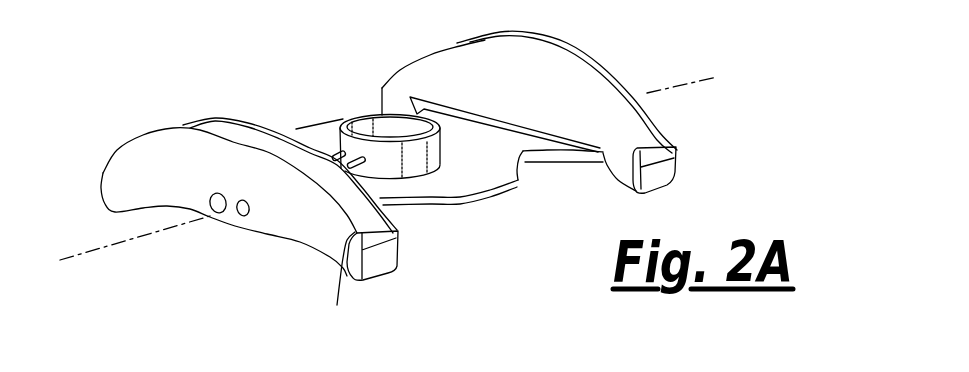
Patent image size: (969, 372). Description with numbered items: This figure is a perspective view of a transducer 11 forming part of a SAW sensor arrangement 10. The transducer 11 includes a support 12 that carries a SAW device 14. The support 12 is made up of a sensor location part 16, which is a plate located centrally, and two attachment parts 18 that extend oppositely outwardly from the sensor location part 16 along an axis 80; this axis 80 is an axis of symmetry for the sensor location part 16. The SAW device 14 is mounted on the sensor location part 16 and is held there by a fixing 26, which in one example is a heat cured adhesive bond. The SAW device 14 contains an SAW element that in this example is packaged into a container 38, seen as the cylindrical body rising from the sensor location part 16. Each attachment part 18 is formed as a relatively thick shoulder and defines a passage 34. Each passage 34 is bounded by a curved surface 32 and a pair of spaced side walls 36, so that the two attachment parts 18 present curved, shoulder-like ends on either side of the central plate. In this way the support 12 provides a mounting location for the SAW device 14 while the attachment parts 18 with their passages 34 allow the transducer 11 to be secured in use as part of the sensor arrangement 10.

The SAW sensor arrangement 10 is at (705, 50).
The transducer 11 is at (585, 51).
The support 12 is at (656, 112).
The SAW device 14 is at (352, 118).
The sensor location part 16 is at (495, 199).
The attachment part 18 is at (383, 258).
The fixing 26 is at (427, 178).
The curved surface 32 is at (345, 198).
The passage 34 is at (323, 182).
The side wall 36 is at (350, 230).
The container 38 is at (370, 115).
The axis 80 is at (78, 253).